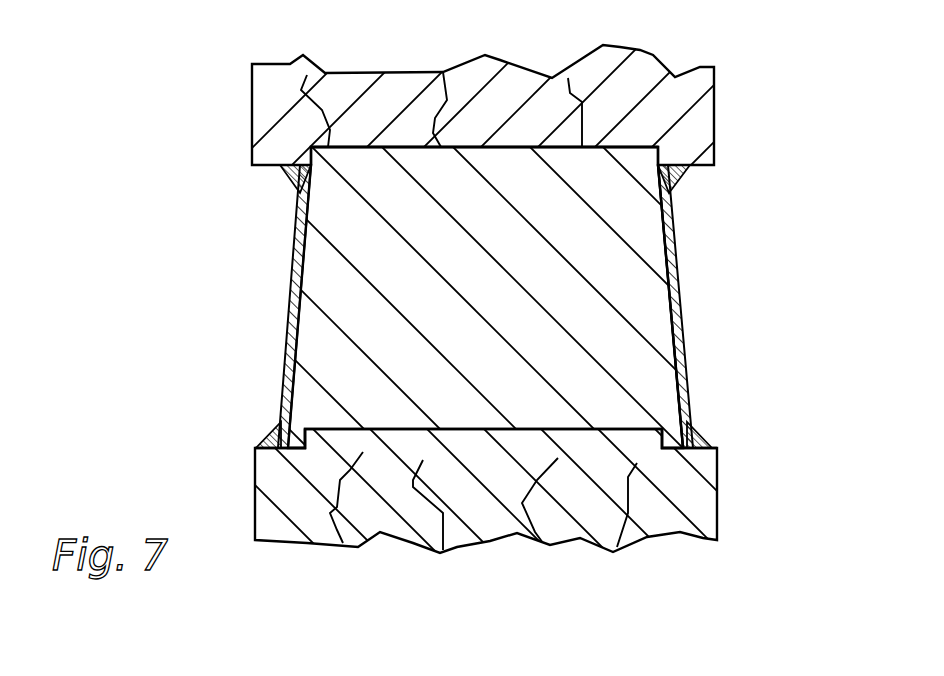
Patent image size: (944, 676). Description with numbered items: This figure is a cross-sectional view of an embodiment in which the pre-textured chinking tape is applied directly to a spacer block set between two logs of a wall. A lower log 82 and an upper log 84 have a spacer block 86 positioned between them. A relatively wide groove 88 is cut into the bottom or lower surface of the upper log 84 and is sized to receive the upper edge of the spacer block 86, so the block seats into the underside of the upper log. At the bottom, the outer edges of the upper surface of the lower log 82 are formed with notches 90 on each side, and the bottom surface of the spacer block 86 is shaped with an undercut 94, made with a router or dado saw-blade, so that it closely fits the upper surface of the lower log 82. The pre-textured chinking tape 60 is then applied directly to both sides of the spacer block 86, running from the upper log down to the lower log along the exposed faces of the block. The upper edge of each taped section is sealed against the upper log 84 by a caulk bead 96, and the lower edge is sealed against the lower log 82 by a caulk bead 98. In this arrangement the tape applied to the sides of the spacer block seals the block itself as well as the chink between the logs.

The upper log 84 is at (683, 83).
The groove 88 is at (655, 145).
The lower log 82 is at (682, 490).
The notches 90 is at (700, 452).
The spacer block 86 is at (640, 312).
The undercut 94 is at (682, 376).
The pre-textured chinking tape 60 is at (673, 248).
The caulk bead 96 is at (690, 182).
The caulk bead 98 is at (700, 432).